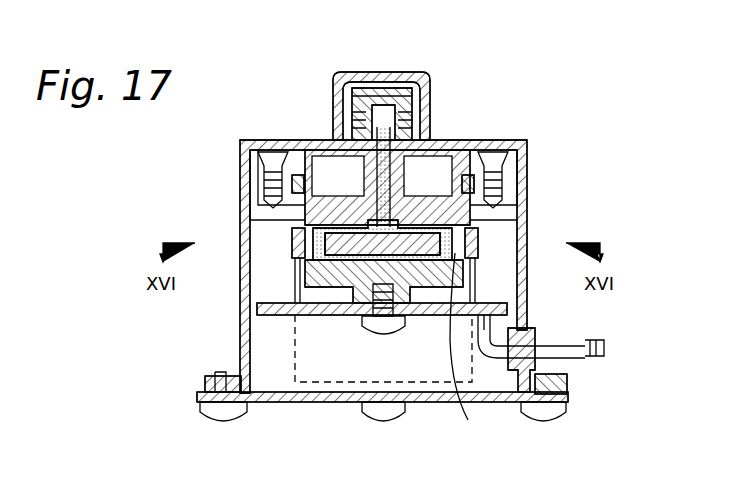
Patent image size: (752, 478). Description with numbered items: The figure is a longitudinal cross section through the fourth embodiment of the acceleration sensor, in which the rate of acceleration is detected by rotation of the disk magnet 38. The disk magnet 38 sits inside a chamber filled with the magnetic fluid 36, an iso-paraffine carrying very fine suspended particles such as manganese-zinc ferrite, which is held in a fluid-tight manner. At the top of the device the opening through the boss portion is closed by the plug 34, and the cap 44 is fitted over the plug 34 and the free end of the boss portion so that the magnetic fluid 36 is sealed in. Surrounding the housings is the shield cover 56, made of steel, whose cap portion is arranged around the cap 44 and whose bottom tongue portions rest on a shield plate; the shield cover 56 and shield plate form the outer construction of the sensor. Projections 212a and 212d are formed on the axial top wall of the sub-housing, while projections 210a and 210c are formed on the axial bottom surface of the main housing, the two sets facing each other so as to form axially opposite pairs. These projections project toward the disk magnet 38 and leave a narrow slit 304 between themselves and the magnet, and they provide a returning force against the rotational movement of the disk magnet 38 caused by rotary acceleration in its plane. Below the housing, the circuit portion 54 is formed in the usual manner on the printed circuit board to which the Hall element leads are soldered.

The plug 34 is at (395, 97).
The cap 44 is at (360, 100).
The magnetic fluid 36 is at (512, 212).
The disk magnet 38 is at (345, 182).
The projection 212d is at (298, 154).
The projection 212a is at (488, 148).
The slit 304 is at (318, 270).
The circuit portion 54 is at (292, 363).
The shield cover 56 is at (520, 280).
The projection 210c is at (333, 275).
The projection 210a is at (479, 351).